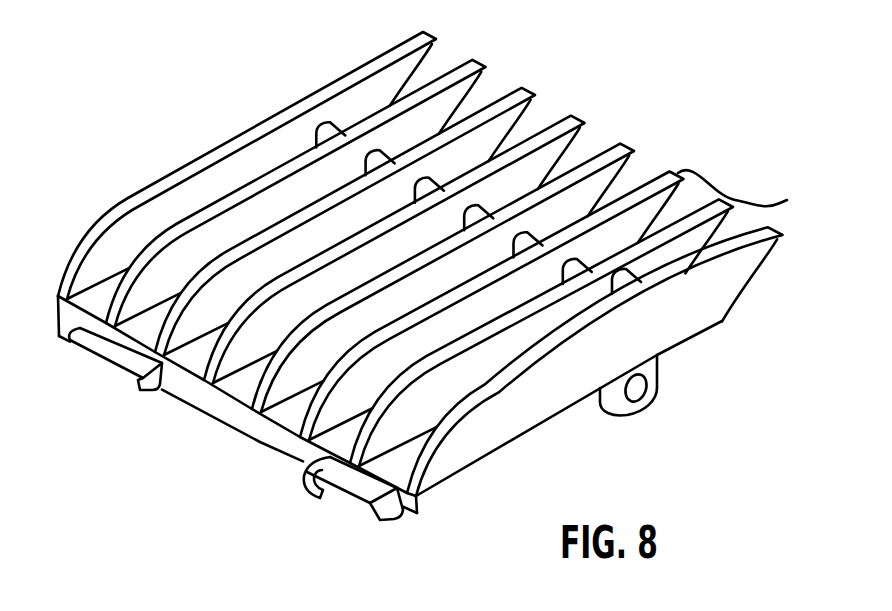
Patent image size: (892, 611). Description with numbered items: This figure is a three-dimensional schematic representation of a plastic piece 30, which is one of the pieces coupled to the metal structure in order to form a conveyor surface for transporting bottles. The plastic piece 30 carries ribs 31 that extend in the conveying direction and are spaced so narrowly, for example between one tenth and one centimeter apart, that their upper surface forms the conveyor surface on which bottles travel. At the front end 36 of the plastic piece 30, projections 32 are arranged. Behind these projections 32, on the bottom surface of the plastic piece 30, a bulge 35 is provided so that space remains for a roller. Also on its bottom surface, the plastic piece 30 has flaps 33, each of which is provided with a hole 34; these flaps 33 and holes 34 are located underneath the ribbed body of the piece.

The plastic piece 30 is at (434, 289).
The ribs 31 is at (779, 223).
The projections 32 is at (90, 357).
The flaps 33 is at (616, 413).
The holes 34 is at (634, 394).
The bulge 35 is at (141, 250).
The front end 36 is at (229, 420).